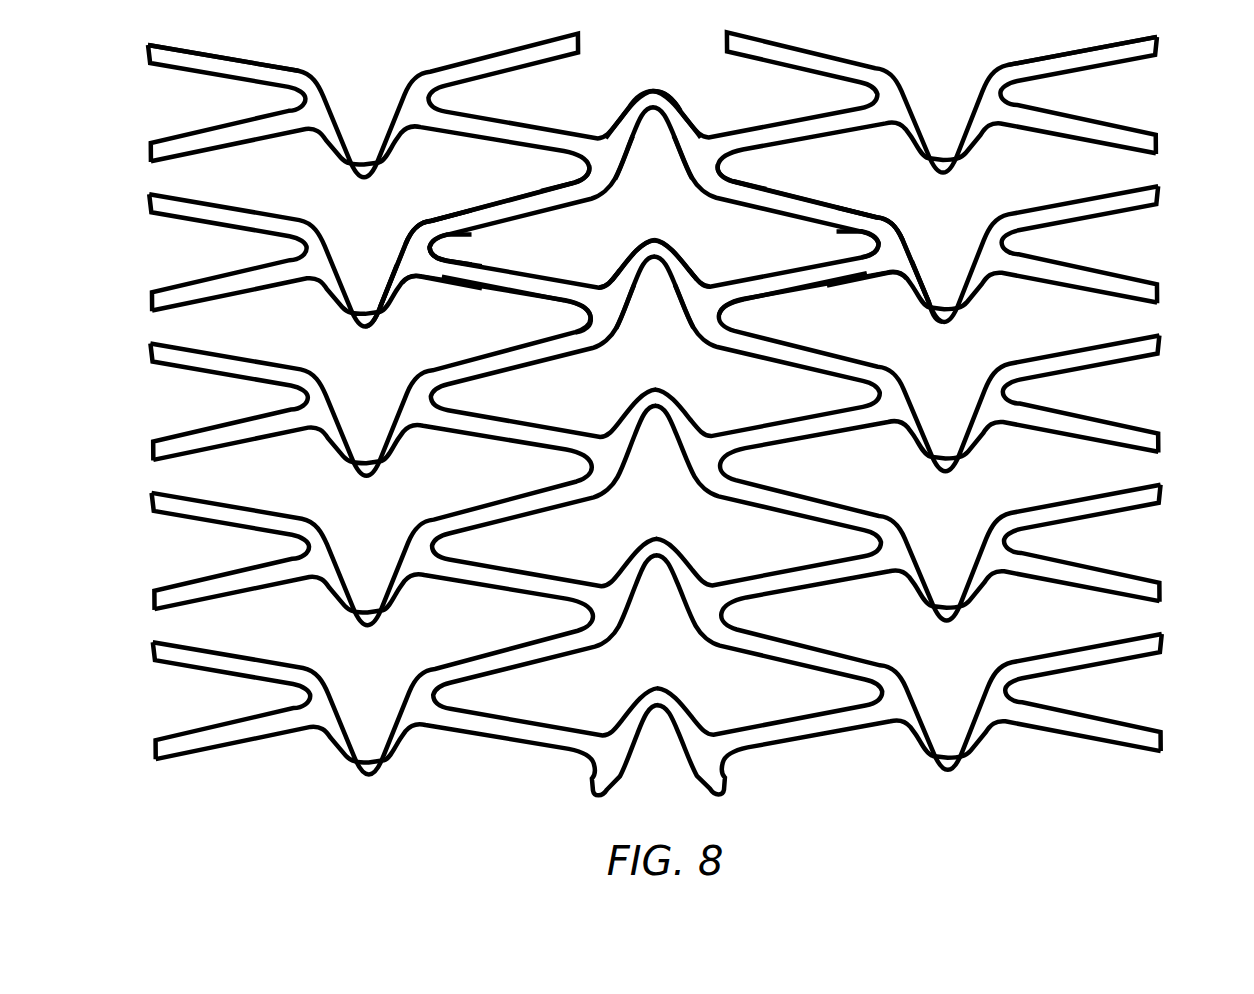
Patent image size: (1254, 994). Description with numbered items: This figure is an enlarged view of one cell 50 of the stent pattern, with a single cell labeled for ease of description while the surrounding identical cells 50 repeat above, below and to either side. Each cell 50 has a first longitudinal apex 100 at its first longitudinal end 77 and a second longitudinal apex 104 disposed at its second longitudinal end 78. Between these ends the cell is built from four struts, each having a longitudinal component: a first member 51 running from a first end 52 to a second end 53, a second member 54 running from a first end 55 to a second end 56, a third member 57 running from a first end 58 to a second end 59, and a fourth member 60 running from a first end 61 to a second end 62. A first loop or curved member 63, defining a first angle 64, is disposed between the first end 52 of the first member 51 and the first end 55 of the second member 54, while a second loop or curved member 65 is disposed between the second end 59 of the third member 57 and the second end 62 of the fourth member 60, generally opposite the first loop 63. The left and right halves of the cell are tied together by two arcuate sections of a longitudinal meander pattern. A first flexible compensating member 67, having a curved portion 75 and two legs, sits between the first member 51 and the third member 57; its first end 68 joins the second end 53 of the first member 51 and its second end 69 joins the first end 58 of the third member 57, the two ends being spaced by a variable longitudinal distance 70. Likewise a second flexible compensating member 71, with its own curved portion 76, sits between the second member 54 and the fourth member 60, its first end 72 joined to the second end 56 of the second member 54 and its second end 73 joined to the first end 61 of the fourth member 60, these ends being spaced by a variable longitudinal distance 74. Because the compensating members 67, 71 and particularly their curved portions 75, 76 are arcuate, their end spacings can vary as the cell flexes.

The cell 50 is at (1110, 625).
The first member 51 is at (493, 212).
The first end of first member 52 is at (447, 222).
The second end of first member 53 is at (562, 200).
The second member 54 is at (507, 284).
The first end of second member 55 is at (450, 280).
The second end of second member 56 is at (569, 304).
The third member 57 is at (800, 203).
The first end of third member 58 is at (734, 188).
The second end of third member 59 is at (863, 213).
The fourth member 60 is at (800, 288).
The first end of fourth member 61 is at (740, 302).
The second end of fourth member 62 is at (870, 273).
The first loop 63 is at (428, 256).
The first angle 64 is at (437, 253).
The second loop 65 is at (880, 249).
The first flexible compensating member 67 is at (643, 93).
The first end of first flexible compensating member 68 is at (612, 124).
The second end of first flexible compensating member 69 is at (705, 128).
The variable longitudinal distance 70 is at (684, 168).
The second flexible compensating member 71 is at (634, 247).
The first end of second flexible compensating member 72 is at (611, 288).
The second end of second flexible compensating member 73 is at (698, 284).
The variable longitudinal distance 74 is at (684, 318).
The right side of peak apex 75 is at (658, 94).
The right side of lower peak apex 76 is at (666, 248).
The first longitudinal end 77 is at (418, 232).
The second longitudinal end 78 is at (882, 218).
The first longitudinal apex 100 is at (408, 243).
The second longitudinal apex 104 is at (897, 233).